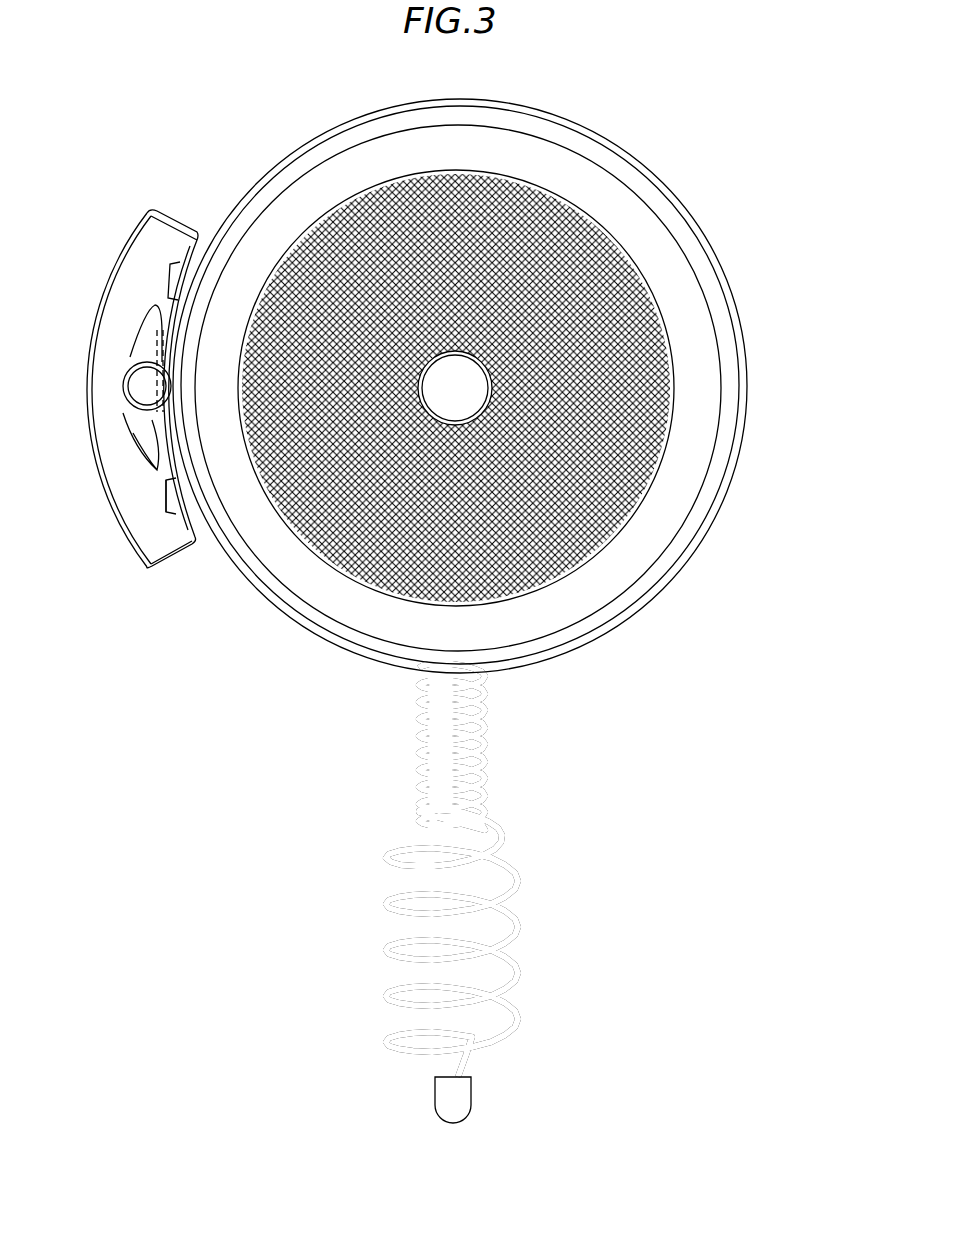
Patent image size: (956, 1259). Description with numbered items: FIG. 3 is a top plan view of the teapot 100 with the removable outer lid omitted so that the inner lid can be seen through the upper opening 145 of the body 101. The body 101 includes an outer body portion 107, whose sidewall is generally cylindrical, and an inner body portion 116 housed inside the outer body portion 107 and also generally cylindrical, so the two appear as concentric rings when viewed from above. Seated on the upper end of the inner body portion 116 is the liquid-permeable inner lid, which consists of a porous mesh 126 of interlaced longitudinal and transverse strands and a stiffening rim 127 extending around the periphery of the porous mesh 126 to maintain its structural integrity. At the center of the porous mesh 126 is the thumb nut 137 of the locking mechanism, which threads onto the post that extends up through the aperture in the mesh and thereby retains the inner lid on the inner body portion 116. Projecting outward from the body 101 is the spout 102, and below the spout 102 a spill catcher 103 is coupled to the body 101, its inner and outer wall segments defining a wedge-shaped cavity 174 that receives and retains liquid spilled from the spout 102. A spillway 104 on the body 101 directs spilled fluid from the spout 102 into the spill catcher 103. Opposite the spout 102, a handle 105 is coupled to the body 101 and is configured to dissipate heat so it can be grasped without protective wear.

The teapot 100 is at (143, 613).
The body 101 is at (345, 97).
The spout 102 is at (128, 410).
The spill catcher 103 is at (170, 212).
The spillway 104 is at (143, 343).
The handle 105 is at (368, 929).
The outer body portion 107 is at (695, 210).
The inner body portion 116 is at (662, 300).
The porous mesh 126 is at (562, 583).
The stiffening rim 127 is at (510, 603).
The thumb nut 137 is at (458, 408).
The upper opening 145 is at (602, 168).
The wedge-shaped cavity 174 is at (155, 528).